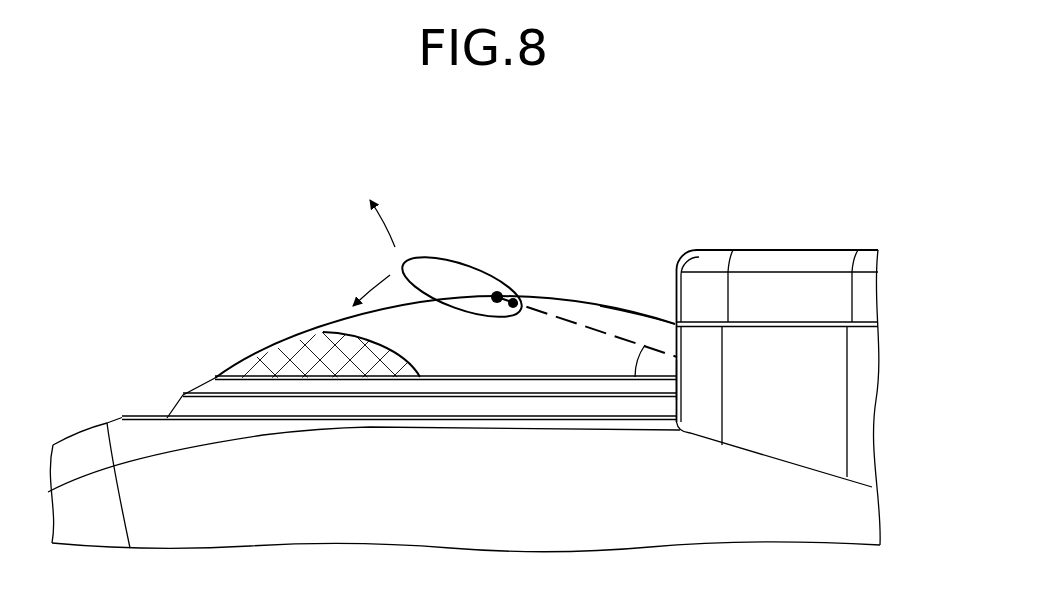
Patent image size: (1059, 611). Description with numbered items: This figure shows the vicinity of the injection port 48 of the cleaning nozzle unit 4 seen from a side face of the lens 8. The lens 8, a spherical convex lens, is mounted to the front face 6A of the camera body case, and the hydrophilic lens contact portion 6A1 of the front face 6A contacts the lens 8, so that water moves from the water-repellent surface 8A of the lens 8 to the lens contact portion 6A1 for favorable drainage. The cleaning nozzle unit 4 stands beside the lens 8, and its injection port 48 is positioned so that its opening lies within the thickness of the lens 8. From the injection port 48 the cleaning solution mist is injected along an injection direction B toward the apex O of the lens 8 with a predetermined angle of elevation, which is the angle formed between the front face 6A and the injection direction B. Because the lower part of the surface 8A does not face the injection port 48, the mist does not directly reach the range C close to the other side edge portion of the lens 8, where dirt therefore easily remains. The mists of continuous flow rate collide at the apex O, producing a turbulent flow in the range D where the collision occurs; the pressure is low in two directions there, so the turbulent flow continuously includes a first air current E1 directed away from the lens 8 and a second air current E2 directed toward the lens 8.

The cleaning nozzle unit 4 is at (790, 236).
The front face 6A is at (140, 418).
The lens contact portion 6A1 is at (208, 390).
The lens 8 is at (477, 353).
The surface 8A is at (645, 313).
The injection port 48 is at (677, 367).
The range close to the other side edge portion C is at (333, 353).
The range D is at (462, 264).
The apex O is at (501, 292).
The injection direction B is at (600, 322).
The first air current E1 is at (380, 222).
The second air current E2 is at (367, 287).